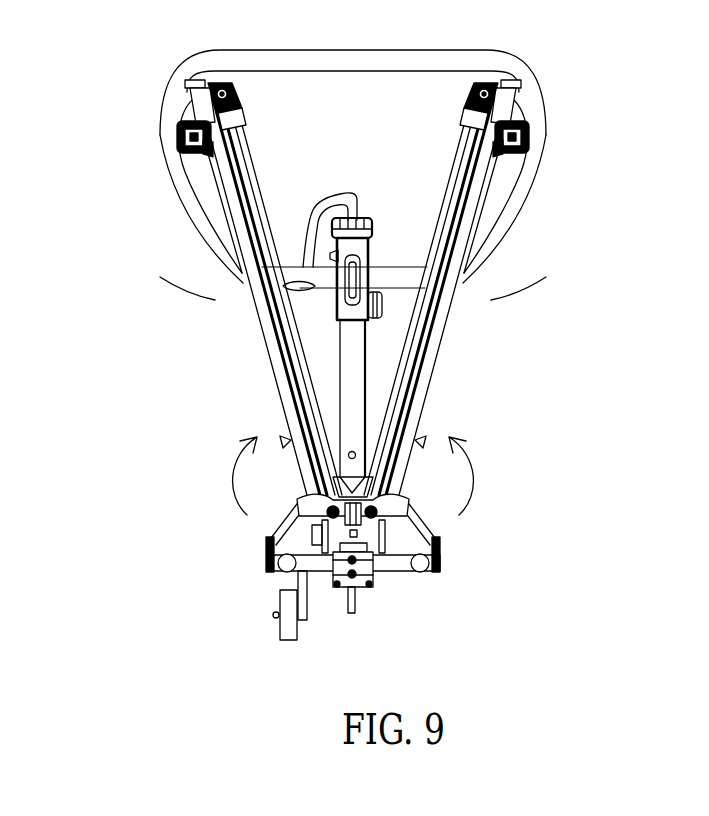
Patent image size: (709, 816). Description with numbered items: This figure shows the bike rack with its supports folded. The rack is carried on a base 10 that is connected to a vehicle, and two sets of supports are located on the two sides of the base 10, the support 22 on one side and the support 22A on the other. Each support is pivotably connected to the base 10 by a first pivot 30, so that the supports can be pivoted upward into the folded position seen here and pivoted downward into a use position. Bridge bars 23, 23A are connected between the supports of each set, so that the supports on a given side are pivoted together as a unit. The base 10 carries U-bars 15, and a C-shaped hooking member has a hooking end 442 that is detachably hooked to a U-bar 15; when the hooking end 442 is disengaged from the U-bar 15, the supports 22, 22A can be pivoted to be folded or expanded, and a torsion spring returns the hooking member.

The base 10 is at (440, 540).
The U-bar 15 is at (273, 552).
The support 22 is at (253, 317).
The support 22A is at (443, 330).
The bridge bar 23 is at (180, 135).
The bridge bar 23A is at (527, 132).
The first pivot 30 is at (328, 520).
The hooking end 442 is at (283, 442).